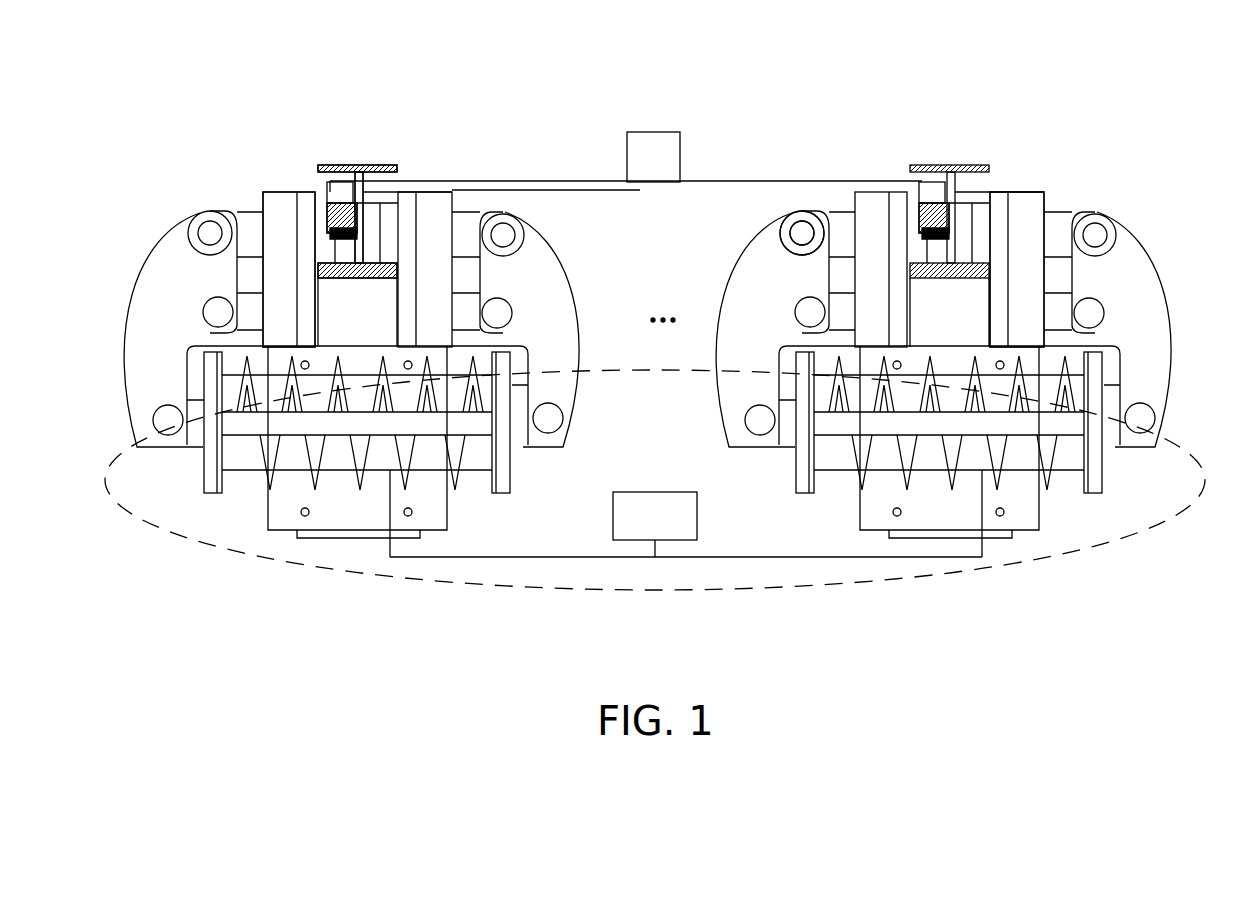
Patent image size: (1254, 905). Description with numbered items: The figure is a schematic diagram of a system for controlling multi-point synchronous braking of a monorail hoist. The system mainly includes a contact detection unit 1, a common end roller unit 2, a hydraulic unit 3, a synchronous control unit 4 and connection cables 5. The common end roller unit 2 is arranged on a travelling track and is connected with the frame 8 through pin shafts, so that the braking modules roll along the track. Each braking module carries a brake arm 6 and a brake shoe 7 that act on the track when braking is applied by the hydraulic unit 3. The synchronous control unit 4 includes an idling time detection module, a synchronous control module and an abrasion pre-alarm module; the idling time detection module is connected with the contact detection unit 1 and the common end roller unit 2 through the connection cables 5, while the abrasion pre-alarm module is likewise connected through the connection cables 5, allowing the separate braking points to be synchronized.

The contact detection unit 1 is at (318, 205).
The common end roller unit 2 is at (372, 268).
The hydraulic unit 3 is at (1070, 549).
The synchronous control unit 4 is at (640, 143).
The connection cable 5 is at (743, 181).
The brake arm 6 is at (817, 213).
The brake shoe 7 is at (943, 207).
The frame 8 is at (992, 240).